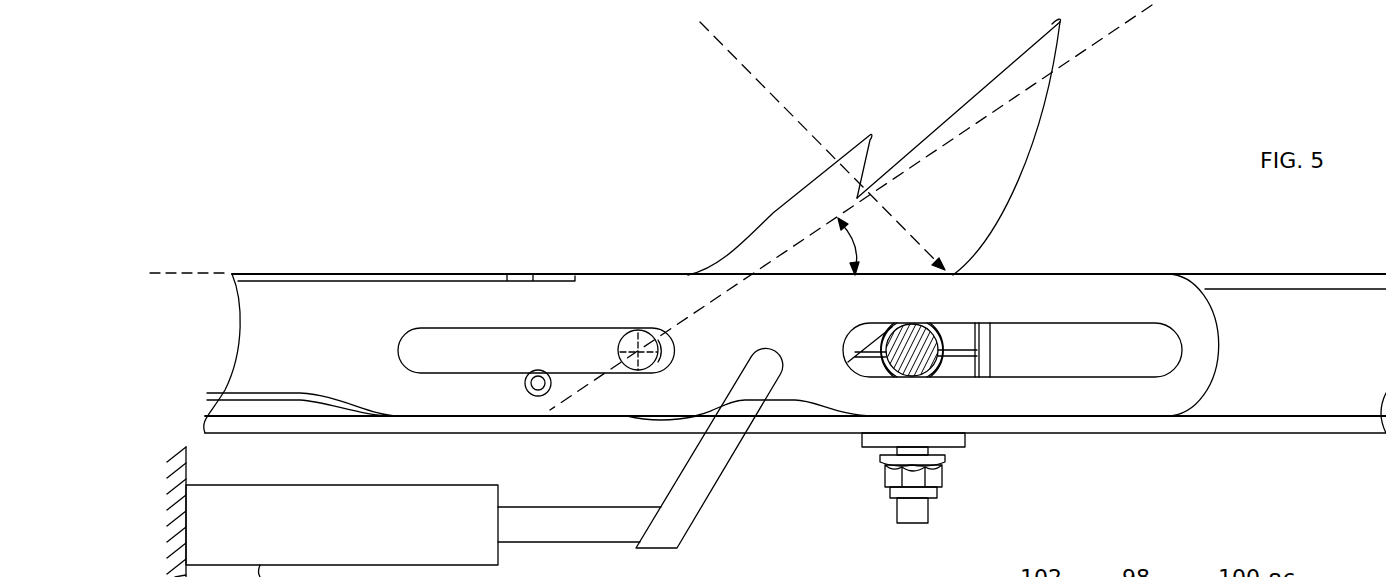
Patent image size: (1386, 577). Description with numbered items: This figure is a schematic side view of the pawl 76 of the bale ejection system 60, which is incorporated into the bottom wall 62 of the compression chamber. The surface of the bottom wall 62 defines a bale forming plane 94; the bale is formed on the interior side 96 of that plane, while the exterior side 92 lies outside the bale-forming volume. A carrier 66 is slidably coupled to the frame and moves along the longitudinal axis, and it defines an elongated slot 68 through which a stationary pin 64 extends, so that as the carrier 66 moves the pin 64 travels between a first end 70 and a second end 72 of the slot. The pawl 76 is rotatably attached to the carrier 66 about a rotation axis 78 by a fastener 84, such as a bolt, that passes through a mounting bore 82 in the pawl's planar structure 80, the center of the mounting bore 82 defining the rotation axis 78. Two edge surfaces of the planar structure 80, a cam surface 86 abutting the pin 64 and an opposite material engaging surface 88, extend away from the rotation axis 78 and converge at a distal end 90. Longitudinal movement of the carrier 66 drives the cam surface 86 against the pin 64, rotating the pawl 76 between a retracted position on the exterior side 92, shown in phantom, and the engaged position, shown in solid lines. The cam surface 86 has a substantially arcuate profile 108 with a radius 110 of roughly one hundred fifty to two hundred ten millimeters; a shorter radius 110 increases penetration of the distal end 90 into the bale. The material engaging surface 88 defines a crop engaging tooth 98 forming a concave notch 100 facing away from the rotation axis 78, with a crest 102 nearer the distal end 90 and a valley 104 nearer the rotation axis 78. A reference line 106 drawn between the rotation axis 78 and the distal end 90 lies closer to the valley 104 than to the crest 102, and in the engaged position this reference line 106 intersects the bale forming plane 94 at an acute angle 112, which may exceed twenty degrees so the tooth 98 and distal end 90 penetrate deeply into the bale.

The bale ejection system 60 is at (1170, 105).
The bottom wall 62 is at (381, 273).
The pin 64 is at (925, 332).
The carrier 66 is at (1197, 377).
The elongated slot 68 is at (1082, 372).
The first end of the slot 70 is at (845, 348).
The second end of the slot 72 is at (1180, 340).
The pawl 76 is at (757, 231).
The rotation axis 78 is at (635, 350).
The planar structure 80 is at (808, 233).
The mounting bore 82 is at (646, 371).
The fastener 84 is at (655, 346).
The cam surface 86 is at (1023, 168).
The material engaging surface 88 is at (967, 128).
The distal end 90 is at (1052, 24).
The exterior side 92 is at (566, 505).
The bale forming plane 94 is at (189, 272).
The interior side 96 is at (641, 80).
The crop engaging tooth 98 is at (852, 142).
The concave notch 100 is at (880, 165).
The crest 102 is at (870, 137).
The valley 104 is at (855, 200).
The reference line 106 is at (1117, 32).
The arcuate profile 108 is at (993, 218).
The radius 110 is at (728, 52).
The acute angle 112 is at (845, 250).